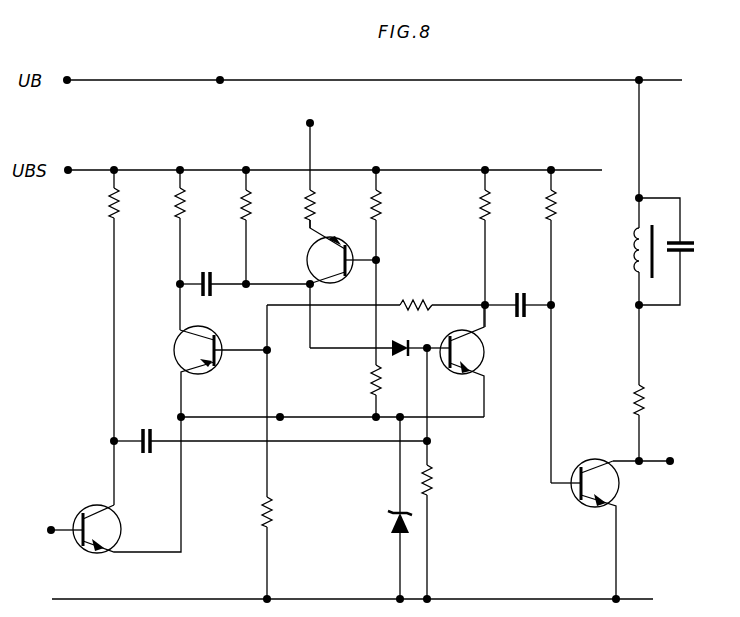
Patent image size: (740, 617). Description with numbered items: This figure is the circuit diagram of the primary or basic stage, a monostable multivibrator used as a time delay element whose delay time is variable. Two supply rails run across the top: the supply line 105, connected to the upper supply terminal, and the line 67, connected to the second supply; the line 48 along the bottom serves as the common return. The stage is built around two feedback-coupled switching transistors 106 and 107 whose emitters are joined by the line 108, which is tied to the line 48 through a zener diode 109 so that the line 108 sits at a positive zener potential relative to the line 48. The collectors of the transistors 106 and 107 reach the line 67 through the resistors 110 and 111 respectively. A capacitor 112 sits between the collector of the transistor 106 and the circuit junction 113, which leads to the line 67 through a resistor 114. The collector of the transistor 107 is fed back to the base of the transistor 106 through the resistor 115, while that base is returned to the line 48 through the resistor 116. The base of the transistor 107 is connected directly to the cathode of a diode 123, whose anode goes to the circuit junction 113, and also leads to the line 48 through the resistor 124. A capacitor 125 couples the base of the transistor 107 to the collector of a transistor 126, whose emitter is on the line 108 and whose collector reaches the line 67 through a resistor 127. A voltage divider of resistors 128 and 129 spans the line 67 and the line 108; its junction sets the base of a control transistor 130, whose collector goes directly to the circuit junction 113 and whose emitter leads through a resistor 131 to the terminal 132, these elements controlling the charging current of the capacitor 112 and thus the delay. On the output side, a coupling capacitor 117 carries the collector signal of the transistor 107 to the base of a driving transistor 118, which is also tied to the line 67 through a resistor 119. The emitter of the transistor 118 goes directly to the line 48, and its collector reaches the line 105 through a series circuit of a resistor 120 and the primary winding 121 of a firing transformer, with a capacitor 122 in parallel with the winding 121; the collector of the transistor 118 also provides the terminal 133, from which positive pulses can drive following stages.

The supply line 105 is at (268, 80).
The line 67 is at (156, 170).
The terminal 132 is at (313, 123).
The resistor 127 is at (110, 202).
The resistor 110 is at (178, 206).
The resistor 114 is at (242, 202).
The resistor 131 is at (304, 206).
The resistor 128 is at (380, 200).
The resistor 111 is at (480, 204).
The resistor 119 is at (548, 202).
The control transistor 130 is at (306, 260).
The capacitor 112 is at (206, 268).
The circuit junction 113 is at (244, 290).
The resistor 115 is at (414, 298).
The coupling capacitor 117 is at (520, 290).
The primary winding of a firing transformer 121 is at (634, 256).
The capacitor 122 is at (680, 240).
The switching transistor 106 is at (200, 376).
The resistor 129 is at (368, 370).
The diode 123 is at (394, 393).
The switching transistor 107 is at (484, 352).
The line 108 is at (288, 416).
The capacitor 125 is at (146, 426).
The resistor 124 is at (434, 490).
The zener diode 109 is at (390, 520).
The resistor 116 is at (262, 518).
The transistor 126 is at (114, 532).
The resistor 120 is at (644, 400).
The terminal 133 is at (672, 458).
The driving transistor 118 is at (614, 486).
The line 48 is at (162, 598).